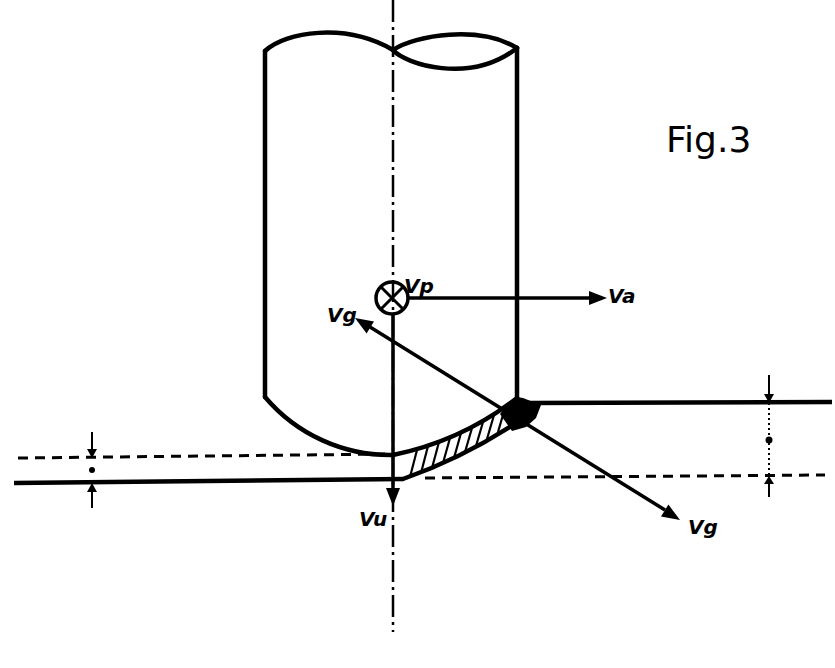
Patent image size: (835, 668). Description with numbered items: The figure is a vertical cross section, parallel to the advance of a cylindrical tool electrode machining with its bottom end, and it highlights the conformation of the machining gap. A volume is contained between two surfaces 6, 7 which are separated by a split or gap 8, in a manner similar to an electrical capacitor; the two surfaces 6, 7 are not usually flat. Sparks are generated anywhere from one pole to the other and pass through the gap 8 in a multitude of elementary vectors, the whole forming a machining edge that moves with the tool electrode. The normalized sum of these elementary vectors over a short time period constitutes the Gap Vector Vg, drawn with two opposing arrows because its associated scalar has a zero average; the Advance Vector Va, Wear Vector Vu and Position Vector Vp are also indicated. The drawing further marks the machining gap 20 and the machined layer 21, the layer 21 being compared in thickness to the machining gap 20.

The surface 6 is at (470, 420).
The surface 7 is at (455, 465).
The gap 8 is at (480, 443).
The machining gap 20 is at (92, 470).
The layer 21 is at (769, 440).